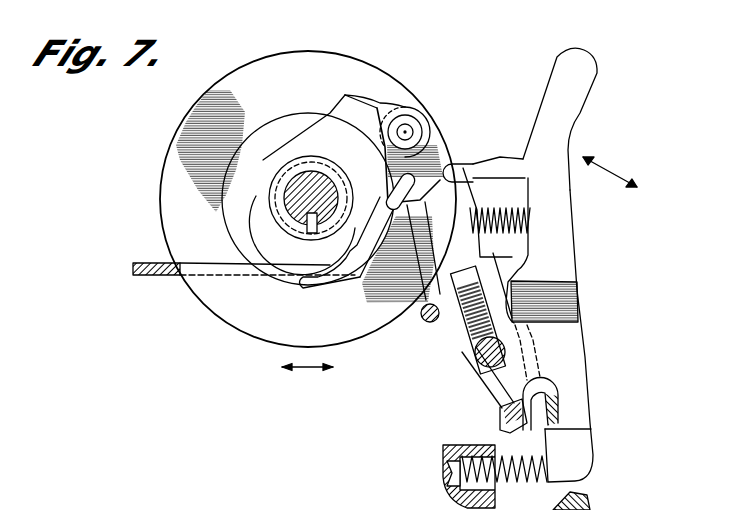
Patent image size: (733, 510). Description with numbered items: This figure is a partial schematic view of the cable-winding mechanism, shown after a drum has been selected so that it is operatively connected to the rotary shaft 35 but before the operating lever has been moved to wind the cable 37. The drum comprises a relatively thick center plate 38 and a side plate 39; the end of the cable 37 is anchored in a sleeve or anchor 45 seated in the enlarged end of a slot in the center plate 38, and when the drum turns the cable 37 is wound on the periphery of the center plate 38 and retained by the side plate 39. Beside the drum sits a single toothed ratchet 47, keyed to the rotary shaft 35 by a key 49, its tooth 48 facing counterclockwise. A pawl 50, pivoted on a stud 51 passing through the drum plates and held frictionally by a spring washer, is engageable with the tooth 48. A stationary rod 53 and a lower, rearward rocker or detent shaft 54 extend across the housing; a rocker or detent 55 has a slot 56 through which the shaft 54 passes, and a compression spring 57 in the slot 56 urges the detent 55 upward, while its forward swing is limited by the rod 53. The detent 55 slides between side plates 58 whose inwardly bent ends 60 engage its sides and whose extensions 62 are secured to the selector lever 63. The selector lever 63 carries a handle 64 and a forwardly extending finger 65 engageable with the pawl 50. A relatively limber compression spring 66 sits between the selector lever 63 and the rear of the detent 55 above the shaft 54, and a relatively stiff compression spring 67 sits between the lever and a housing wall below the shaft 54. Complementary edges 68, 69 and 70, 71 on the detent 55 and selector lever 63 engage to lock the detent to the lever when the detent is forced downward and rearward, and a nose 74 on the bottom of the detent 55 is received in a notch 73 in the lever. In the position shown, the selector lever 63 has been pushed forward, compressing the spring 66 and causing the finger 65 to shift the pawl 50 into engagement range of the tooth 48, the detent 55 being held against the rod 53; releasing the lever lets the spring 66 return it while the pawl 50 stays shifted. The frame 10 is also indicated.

The frame 10 is at (590, 503).
The rotary shaft 35 is at (322, 190).
The cable 37 is at (153, 277).
The center plate 38 is at (300, 134).
The side plate 39 is at (258, 63).
The sleeve or anchor 45 is at (362, 273).
The single toothed ratchet 47 is at (268, 121).
The tooth 48 is at (388, 196).
The key 49 is at (253, 228).
The pawl 50 is at (377, 107).
The stud 51 is at (410, 129).
The stationary rod or shaft 53 is at (423, 320).
The rocker or detent shaft 54 is at (500, 382).
The rocker or detent 55 is at (470, 190).
The slot 56 is at (467, 323).
The compression spring 57 is at (487, 362).
The side plate 58 is at (497, 398).
The inwardly bent end 60 is at (507, 423).
The extension 62 is at (568, 353).
The selector lever 63 is at (570, 308).
The handle 64 is at (580, 97).
The finger 65 is at (500, 158).
The compression spring 66 is at (515, 203).
The compression spring 67 is at (462, 469).
The edge 68 is at (523, 270).
The edge 69 is at (517, 282).
The edge 70 is at (563, 400).
The edge 71 is at (550, 447).
The notch 73 is at (565, 430).
The nose 74 is at (563, 408).